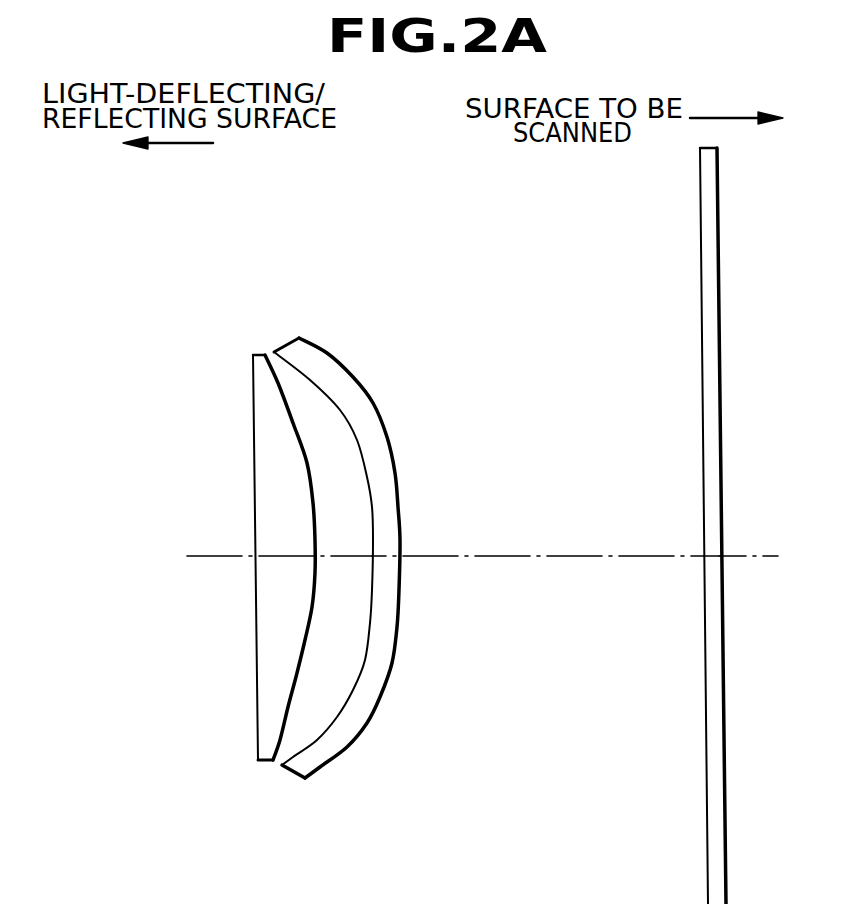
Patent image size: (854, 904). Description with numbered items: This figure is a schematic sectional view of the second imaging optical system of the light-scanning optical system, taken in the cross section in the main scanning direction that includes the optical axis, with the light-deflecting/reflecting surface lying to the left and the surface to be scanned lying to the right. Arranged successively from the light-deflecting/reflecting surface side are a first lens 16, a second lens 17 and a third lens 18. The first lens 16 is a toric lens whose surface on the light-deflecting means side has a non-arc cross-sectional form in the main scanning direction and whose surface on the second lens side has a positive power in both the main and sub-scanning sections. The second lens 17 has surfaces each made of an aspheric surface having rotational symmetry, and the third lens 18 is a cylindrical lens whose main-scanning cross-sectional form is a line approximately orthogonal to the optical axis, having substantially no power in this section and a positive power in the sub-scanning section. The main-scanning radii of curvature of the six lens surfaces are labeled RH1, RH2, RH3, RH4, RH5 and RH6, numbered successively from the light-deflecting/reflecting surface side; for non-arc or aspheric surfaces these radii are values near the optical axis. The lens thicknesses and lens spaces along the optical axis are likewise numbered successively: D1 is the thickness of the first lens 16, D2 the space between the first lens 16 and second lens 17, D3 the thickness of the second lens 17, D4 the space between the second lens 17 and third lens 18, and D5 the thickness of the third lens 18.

The first lens 16 is at (245, 534).
The second lens 17 is at (350, 538).
The third lens 18 is at (703, 526).
The radius of curvature of the first lens surface in the main scanning direction RH1 is at (252, 405).
The radius of curvature of the second lens surface in the main scanning direction RH2 is at (286, 377).
The radius of curvature of the third lens surface in the main scanning direction RH3 is at (312, 386).
The radius of curvature of the fourth lens surface in the main scanning direction RH4 is at (371, 395).
The radius of curvature of the fifth lens surface in the main scanning direction RH5 is at (700, 302).
The radius of curvature of the sixth lens surface in the main scanning direction RH6 is at (719, 303).
The lens thickness of the first lens D1 is at (275, 560).
The lens space between the first and second lenses D2 is at (343, 560).
The lens thickness of the second lens D3 is at (387, 562).
The lens space between the second and third lenses D4 is at (497, 556).
The lens thickness of the third lens D5 is at (713, 556).